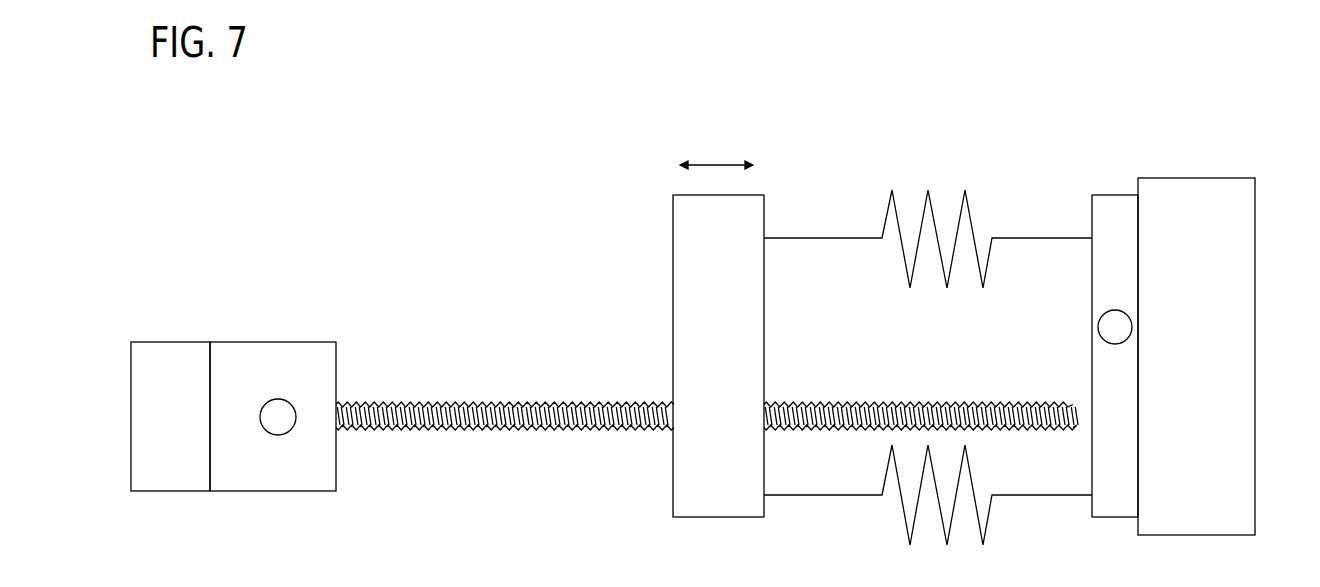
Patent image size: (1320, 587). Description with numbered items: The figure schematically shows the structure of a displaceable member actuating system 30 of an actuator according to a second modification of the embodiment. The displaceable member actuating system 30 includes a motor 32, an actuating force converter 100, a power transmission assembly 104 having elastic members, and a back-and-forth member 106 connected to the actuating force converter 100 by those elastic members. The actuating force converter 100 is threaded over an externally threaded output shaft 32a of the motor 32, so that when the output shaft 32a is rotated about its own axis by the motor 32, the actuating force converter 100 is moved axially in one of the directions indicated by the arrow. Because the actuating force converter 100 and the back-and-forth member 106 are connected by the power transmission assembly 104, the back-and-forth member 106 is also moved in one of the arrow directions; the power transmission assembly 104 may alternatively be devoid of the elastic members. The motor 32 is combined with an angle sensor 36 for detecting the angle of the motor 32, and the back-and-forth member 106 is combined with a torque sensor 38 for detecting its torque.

The displaceable member actuating system 30 is at (505, 150).
The motor 32 is at (257, 355).
The output shaft 32a is at (457, 400).
The angle sensor 36 is at (148, 388).
The torque sensor 38 is at (1098, 330).
The actuating force converter 100 is at (748, 337).
The power transmission assembly 104 is at (928, 193).
The back-and-forth member 106 is at (1238, 302).